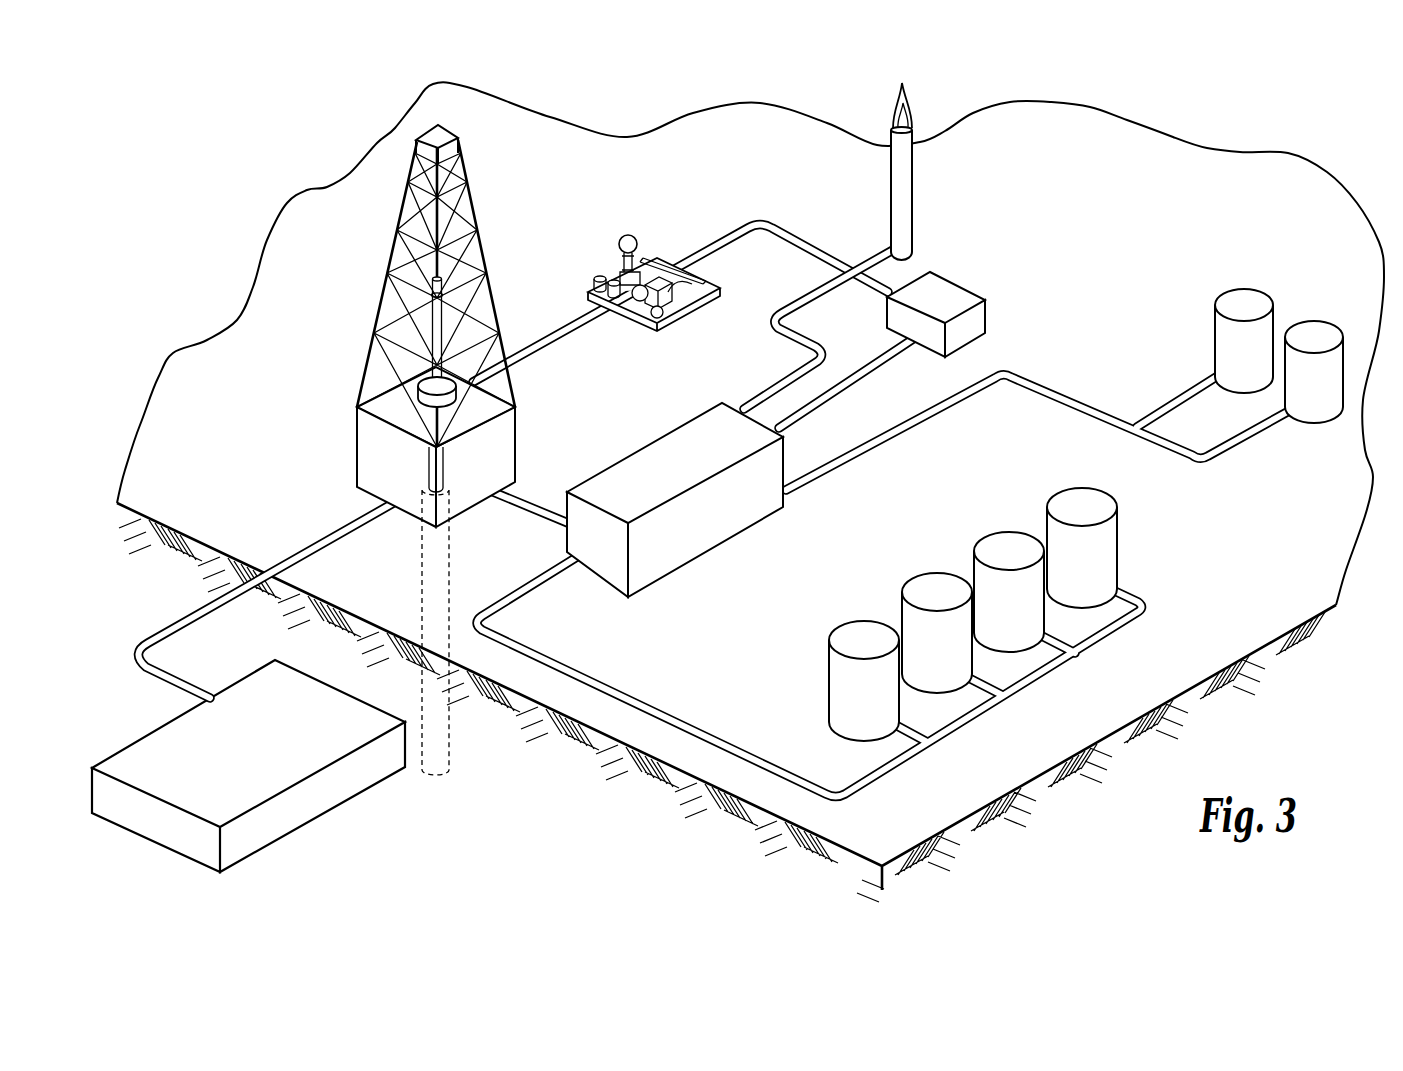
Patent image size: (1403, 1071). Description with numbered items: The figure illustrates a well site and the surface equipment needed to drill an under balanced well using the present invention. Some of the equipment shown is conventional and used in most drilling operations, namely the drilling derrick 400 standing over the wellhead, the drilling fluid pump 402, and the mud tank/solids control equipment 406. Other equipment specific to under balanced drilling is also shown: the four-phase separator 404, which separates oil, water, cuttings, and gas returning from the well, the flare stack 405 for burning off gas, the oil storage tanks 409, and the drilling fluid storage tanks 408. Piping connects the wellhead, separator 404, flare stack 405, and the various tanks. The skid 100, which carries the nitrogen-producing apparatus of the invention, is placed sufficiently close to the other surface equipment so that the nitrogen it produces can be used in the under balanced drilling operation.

The skid 100 is at (250, 760).
The drilling derrick 400 is at (412, 158).
The drilling fluid pump 402 is at (613, 275).
The four-phase separator 404 is at (650, 443).
The flare stack 405 is at (903, 167).
The mud tank/solids control equipment 406 is at (973, 318).
The drilling fluid storage tanks 408 is at (1309, 335).
The oil storage tanks 409 is at (1010, 543).